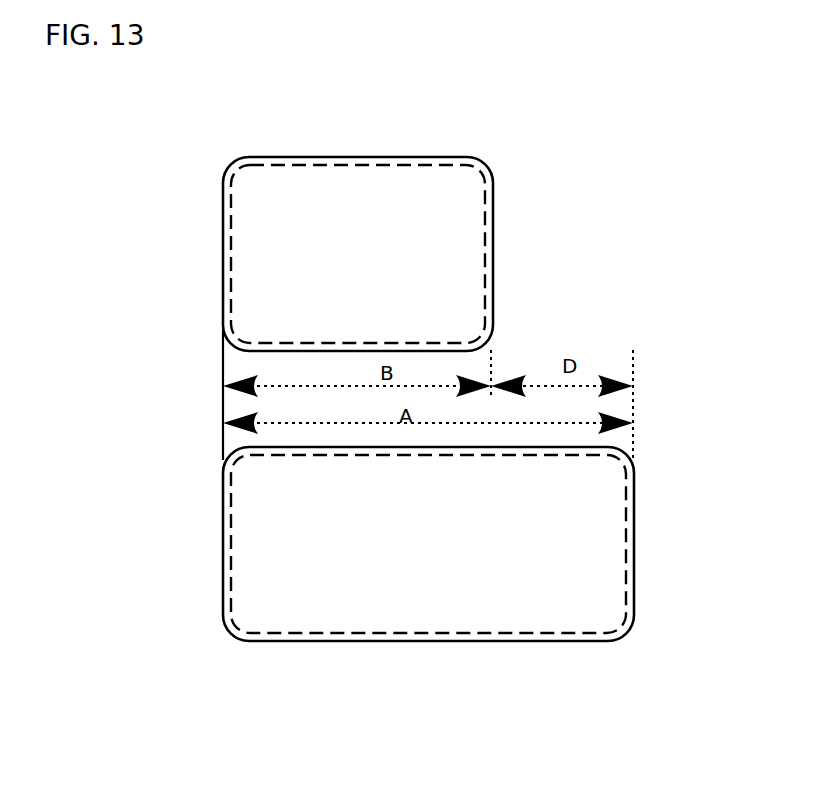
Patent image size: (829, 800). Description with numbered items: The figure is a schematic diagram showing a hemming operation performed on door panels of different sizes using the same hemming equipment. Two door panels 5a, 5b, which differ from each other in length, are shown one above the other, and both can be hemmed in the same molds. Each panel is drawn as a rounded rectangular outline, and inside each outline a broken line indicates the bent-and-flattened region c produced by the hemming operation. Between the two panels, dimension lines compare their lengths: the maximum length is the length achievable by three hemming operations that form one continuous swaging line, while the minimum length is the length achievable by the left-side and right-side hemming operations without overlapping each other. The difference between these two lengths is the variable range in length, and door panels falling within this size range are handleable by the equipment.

The door panel 5b is at (340, 157).
The door panel 5a is at (387, 641).
The bent-and-flattened region c is at (483, 232).